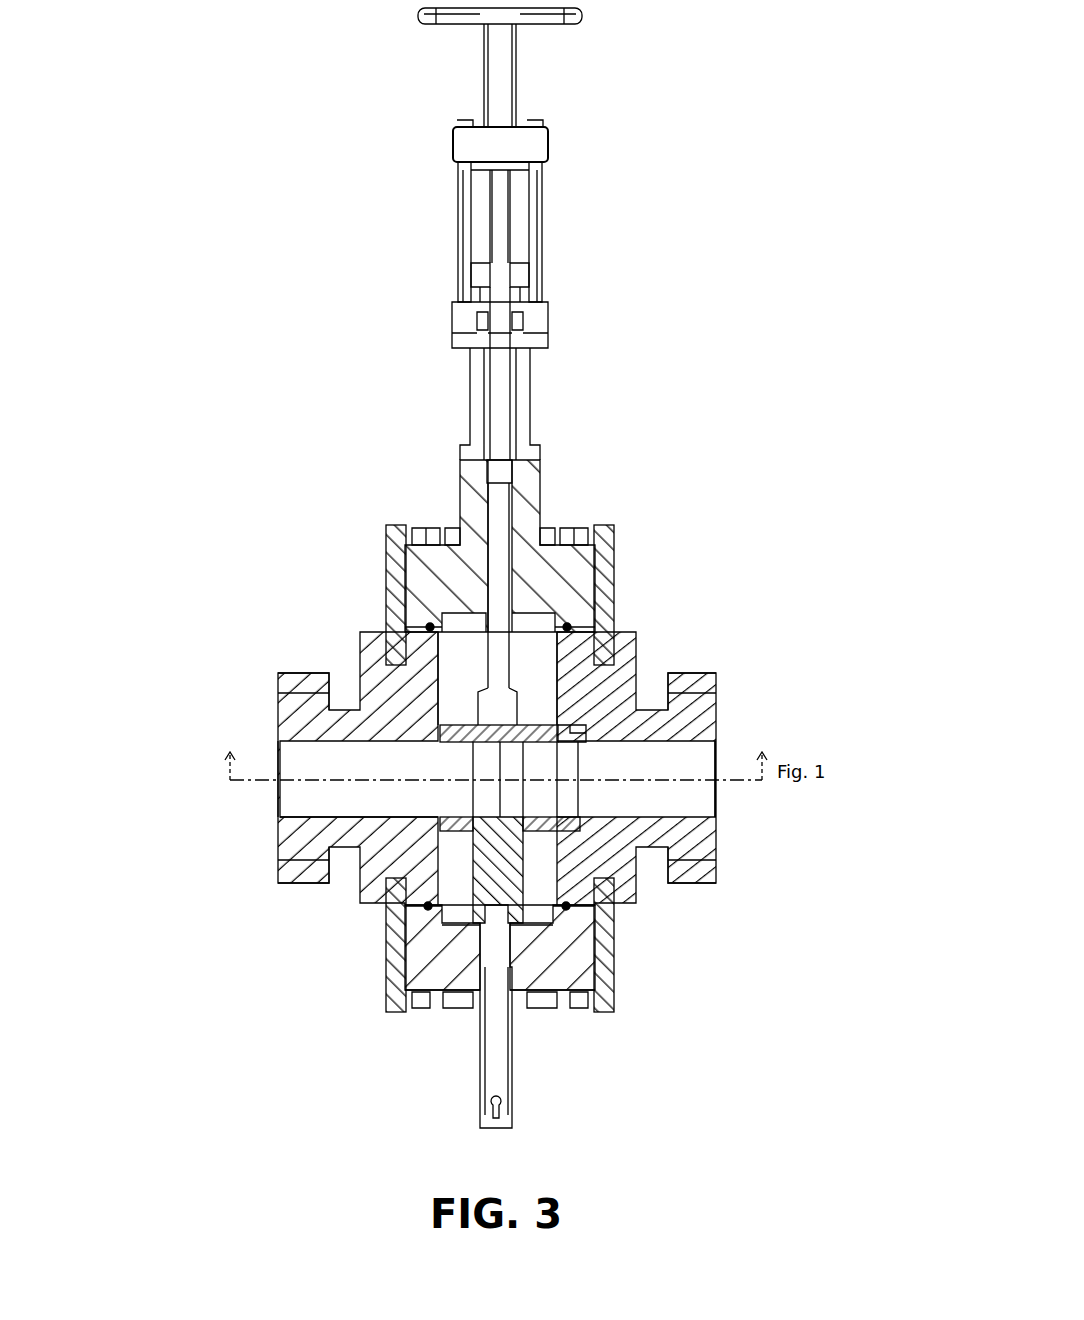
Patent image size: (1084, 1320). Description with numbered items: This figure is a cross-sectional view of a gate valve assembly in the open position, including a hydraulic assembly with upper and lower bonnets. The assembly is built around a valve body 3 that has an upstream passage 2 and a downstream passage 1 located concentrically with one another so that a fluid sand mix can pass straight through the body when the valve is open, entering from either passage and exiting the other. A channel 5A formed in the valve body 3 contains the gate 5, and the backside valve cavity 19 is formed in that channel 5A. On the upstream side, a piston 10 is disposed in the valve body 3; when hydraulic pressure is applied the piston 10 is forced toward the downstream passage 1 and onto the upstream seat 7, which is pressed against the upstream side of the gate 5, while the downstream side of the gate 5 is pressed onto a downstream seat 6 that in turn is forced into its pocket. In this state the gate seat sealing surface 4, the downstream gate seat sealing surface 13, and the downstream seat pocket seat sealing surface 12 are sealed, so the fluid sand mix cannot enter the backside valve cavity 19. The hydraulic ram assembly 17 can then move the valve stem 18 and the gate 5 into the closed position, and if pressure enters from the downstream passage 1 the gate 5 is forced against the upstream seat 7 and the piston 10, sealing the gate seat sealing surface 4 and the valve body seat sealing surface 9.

The downstream passage 1 is at (300, 792).
The upstream passage 2 is at (698, 795).
The valve body 3 is at (547, 793).
The gate seat sealing surface 4 is at (560, 837).
The gate 5 is at (493, 785).
The channel 5A is at (440, 712).
The downstream seat 6 is at (457, 792).
The upstream seat 7 is at (565, 795).
The valve body seat sealing surface 9 is at (698, 830).
The piston 10 is at (582, 790).
The downstream seat pocket seat sealing surface 12 is at (280, 823).
The downstream gate seat sealing surface 13 is at (440, 822).
The hydraulic ram assembly 17 is at (545, 226).
The valve stem 18 is at (508, 396).
The backside valve cavity 19 is at (384, 573).